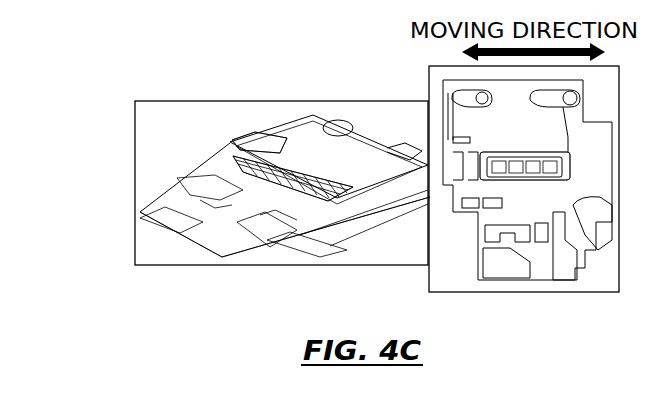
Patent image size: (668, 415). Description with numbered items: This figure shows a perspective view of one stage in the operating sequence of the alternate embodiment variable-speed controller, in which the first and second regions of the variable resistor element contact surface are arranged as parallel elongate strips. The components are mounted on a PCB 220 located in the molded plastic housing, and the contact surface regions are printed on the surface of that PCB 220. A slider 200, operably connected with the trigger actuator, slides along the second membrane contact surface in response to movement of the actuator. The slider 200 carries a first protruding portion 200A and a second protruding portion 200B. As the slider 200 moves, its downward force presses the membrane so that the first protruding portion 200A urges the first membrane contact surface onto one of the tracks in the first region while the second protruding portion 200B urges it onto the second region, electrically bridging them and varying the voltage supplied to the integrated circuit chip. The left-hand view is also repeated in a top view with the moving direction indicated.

The slider 200 is at (225, 139).
The first protruding portion 200A is at (270, 132).
The second protruding portion 200B is at (259, 142).
The PCB 220 is at (212, 249).